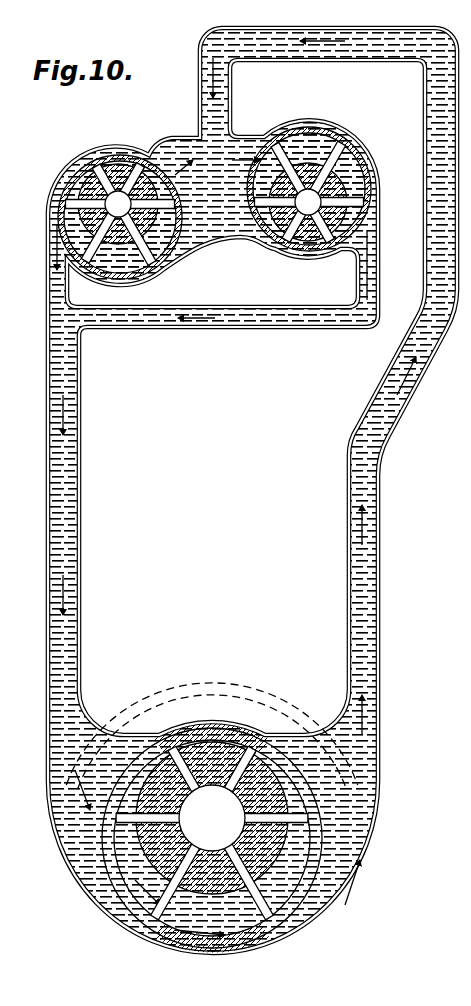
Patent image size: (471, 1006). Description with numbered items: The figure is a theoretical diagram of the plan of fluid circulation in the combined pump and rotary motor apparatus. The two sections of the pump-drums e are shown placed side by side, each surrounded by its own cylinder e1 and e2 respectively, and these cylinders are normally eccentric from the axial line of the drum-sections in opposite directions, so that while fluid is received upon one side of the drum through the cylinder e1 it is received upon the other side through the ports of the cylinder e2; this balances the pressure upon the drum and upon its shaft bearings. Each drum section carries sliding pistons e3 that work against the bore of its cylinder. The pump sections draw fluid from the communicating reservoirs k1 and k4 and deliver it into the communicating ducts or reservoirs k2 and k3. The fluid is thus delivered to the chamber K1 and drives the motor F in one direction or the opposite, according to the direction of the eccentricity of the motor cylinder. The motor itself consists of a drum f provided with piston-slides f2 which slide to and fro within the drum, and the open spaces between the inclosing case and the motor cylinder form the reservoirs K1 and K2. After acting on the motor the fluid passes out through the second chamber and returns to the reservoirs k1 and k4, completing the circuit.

The chamber K1 is at (70, 528).
The reservoir K2 is at (387, 766).
The reservoir k1 is at (243, 157).
The duct or reservoir k2 is at (379, 265).
The duct or reservoir k3 is at (64, 212).
The reservoir k4 is at (180, 150).
The pump-drum e is at (124, 247).
The cylinder e1 is at (328, 138).
The cylinder e2 is at (110, 158).
The sliding vanes e3 is at (181, 276).
The motor F is at (222, 953).
The drum f is at (212, 838).
The piston-slides f2 is at (173, 737).